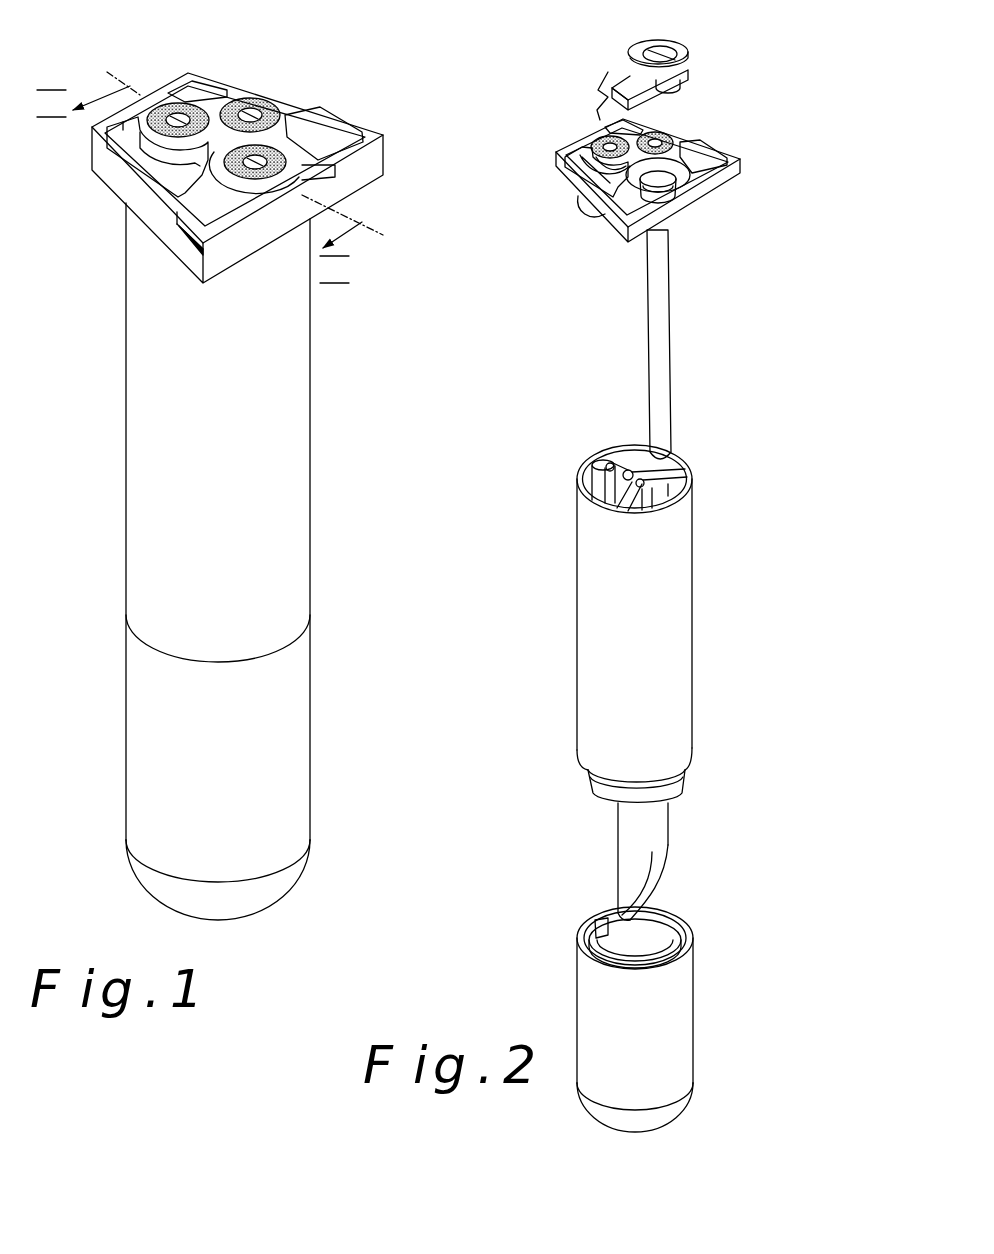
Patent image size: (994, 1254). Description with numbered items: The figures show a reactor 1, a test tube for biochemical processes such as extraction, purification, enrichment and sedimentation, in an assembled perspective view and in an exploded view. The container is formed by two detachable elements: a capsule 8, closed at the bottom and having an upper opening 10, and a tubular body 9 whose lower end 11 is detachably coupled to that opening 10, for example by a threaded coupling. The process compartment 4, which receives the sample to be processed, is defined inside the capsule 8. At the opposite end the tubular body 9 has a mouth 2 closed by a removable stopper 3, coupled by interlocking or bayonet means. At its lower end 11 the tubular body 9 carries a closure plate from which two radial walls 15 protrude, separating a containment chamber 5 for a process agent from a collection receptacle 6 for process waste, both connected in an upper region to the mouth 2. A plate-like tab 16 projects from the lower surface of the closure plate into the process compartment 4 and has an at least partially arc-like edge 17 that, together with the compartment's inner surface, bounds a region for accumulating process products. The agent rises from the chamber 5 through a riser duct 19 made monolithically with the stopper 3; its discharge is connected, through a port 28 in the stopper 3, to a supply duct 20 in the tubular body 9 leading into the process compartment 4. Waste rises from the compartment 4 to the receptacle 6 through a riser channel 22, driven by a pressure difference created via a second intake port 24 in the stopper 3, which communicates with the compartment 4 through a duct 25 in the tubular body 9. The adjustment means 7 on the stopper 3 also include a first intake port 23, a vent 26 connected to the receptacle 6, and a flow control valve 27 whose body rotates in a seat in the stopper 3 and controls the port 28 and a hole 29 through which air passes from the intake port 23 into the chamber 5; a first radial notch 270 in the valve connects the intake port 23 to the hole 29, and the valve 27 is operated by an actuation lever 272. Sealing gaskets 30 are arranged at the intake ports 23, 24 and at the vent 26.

In FIG. 1, the reactor 1 is at (381, 118).
In FIG. 2, the reactor 1 is at (508, 815).
In FIG. 2, the mouth 2 is at (692, 475).
In FIG. 1, the stopper 3 is at (133, 215).
In FIG. 2, the stopper 3 is at (744, 168).
In FIG. 2, the process compartment 4 is at (647, 955).
In FIG. 2, the containment chamber 5 is at (670, 490).
In FIG. 2, the collection receptacle 6 is at (593, 480).
In FIG. 2, the adjustment means 7 is at (575, 133).
In FIG. 1, the capsule 8 is at (135, 765).
In FIG. 2, the capsule 8 is at (585, 983).
In FIG. 1, the tubular body 9 is at (130, 470).
In FIG. 2, the tubular body 9 is at (578, 657).
In FIG. 2, the upper opening 10 is at (685, 953).
In FIG. 2, the lower end 11 is at (678, 777).
In FIG. 2, the radial walls 15 is at (667, 473).
In FIG. 2, the plate-like tab 16 is at (617, 827).
In FIG. 2, the edge 17 is at (642, 882).
In FIG. 2, the riser duct 19 is at (663, 348).
In FIG. 2, the supply duct 20 is at (640, 488).
In FIG. 2, the riser channel 22 is at (627, 467).
In FIG. 1, the first intake port 23 is at (278, 145).
In FIG. 1, the second intake port 24 is at (183, 112).
In FIG. 2, the second intake port 24 is at (608, 145).
In FIG. 2, the duct 25 is at (607, 460).
In FIG. 1, the vent 26 is at (250, 120).
In FIG. 2, the vent 26 is at (653, 138).
In FIG. 1, the flow control valve 27 is at (187, 235).
In FIG. 2, the flow control valve 27 is at (706, 70).
In FIG. 2, the port 28 is at (643, 182).
In FIG. 2, the hole 29 is at (704, 182).
In FIG. 1, the sealing gaskets 30 is at (240, 105).
In FIG. 2, the sealing gaskets 30 is at (672, 137).
In FIG. 2, the first radial notch 270 is at (673, 57).
In FIG. 1, the actuation lever 272 is at (213, 223).
In FIG. 2, the actuation lever 272 is at (633, 86).